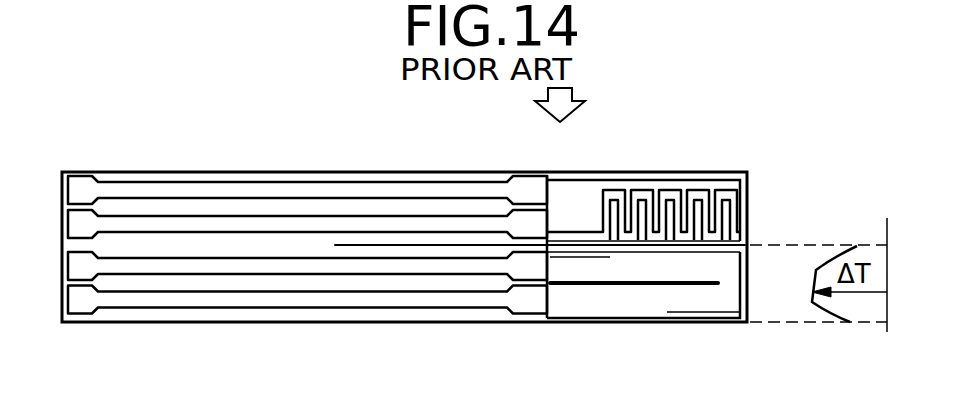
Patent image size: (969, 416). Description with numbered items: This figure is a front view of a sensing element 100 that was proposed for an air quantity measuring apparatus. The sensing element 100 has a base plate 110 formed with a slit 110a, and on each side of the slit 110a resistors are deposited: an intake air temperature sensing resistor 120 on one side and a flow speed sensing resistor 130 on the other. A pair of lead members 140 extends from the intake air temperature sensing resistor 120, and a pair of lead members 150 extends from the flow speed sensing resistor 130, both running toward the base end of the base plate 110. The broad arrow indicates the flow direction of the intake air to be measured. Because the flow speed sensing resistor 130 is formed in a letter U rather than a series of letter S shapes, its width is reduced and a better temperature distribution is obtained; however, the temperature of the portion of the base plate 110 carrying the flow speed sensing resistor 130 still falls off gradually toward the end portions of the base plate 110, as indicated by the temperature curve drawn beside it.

The sensing element 100 is at (360, 162).
The base plate 110 is at (465, 312).
The slit 110a is at (746, 246).
The intake air temperature sensing resistor 120 is at (748, 188).
The flow speed sensing resistor 130 is at (723, 307).
The lead member 140 is at (220, 187).
The lead member 150 is at (235, 300).